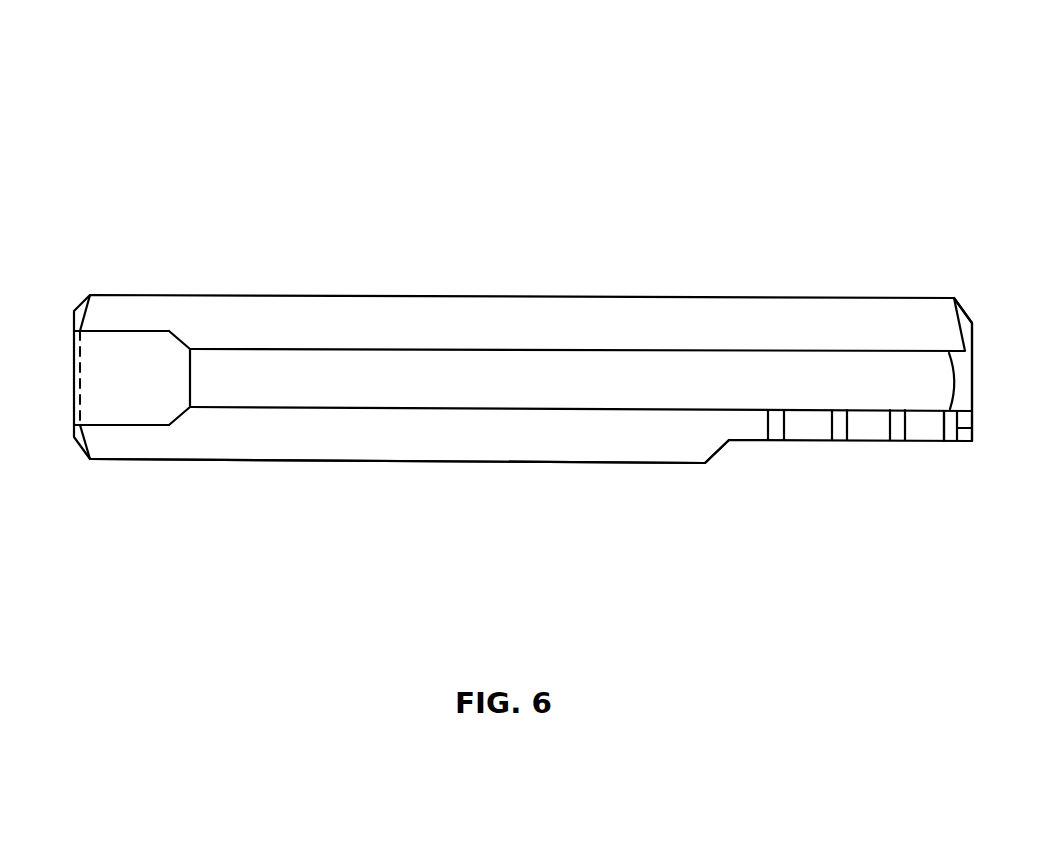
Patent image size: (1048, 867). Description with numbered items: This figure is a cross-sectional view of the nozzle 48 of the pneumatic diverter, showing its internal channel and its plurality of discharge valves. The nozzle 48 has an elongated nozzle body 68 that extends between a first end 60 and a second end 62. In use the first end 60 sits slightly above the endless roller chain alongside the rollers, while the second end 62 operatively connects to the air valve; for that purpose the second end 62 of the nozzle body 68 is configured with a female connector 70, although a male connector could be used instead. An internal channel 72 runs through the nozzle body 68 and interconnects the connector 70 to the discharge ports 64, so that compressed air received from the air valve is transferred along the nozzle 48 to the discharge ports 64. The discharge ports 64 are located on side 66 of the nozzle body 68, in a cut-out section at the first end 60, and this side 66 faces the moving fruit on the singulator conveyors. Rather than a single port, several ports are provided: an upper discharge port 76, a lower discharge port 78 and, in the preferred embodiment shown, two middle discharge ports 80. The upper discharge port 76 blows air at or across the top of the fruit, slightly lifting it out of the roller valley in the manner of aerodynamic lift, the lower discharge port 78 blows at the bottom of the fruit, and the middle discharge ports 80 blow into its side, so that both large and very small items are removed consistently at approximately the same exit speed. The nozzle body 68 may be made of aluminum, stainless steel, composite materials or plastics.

The nozzle 48 is at (670, 180).
The first end 60 is at (937, 295).
The second end 62 is at (98, 282).
The discharge ports 64 is at (927, 427).
The side 66 is at (296, 312).
The nozzle body 68 is at (293, 430).
The female connector 70 is at (132, 385).
The internal channel 72 is at (498, 377).
The upper discharge port 76 is at (772, 440).
The lower discharge port 78 is at (948, 440).
The middle discharge ports 80 is at (837, 440).